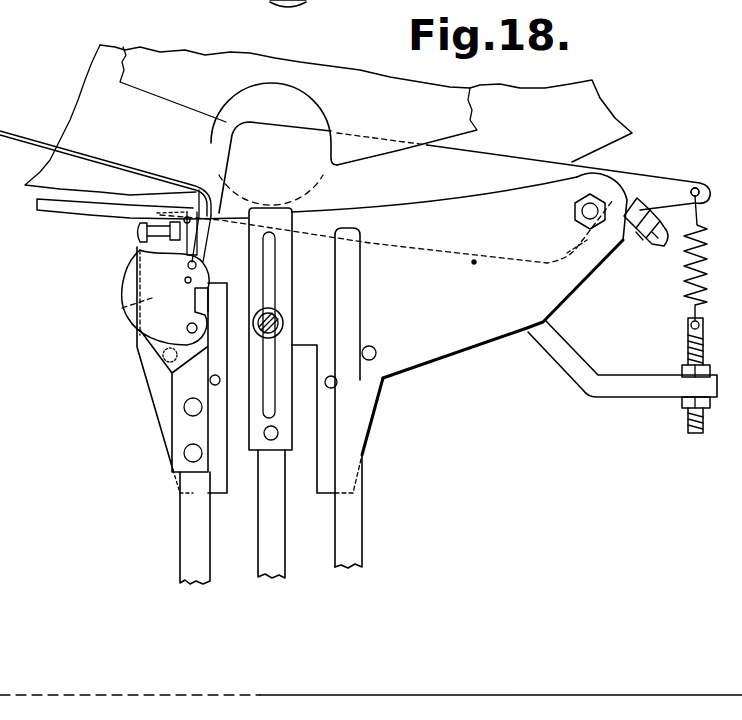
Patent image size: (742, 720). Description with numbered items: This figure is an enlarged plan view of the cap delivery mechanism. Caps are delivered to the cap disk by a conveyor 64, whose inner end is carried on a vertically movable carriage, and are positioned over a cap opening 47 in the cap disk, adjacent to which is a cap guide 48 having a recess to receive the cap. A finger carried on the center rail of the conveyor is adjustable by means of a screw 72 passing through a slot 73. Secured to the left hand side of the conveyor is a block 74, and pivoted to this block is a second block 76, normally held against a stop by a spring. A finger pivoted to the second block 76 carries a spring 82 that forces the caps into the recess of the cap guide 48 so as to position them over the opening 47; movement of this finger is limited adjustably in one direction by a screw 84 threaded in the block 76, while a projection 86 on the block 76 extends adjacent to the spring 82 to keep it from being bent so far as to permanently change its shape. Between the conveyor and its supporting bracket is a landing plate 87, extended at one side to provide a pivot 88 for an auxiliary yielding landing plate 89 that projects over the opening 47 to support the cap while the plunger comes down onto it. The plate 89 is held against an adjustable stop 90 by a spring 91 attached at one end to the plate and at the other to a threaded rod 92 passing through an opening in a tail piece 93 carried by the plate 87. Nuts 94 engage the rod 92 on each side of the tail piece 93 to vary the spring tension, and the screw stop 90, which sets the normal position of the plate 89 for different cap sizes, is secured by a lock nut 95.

The cap opening 47 is at (241, 104).
The cap guide 48 is at (328, 120).
The spring 82 is at (135, 178).
The projection 86 is at (85, 216).
The screw 84 is at (136, 230).
The second block 76 is at (152, 298).
The block 74 is at (187, 430).
The conveyor 64 is at (196, 518).
The slot 73 is at (270, 278).
The screw 72 is at (284, 326).
The landing plate 87 is at (391, 384).
The auxiliary yielding landing plate 89 is at (501, 192).
The pivot 88 is at (588, 209).
The lock nut 95 is at (656, 213).
The adjustable stop 90 is at (662, 243).
The spring 91 is at (682, 267).
The threaded rod 92 is at (685, 332).
The nuts 94 is at (682, 372).
The tail piece 93 is at (667, 388).